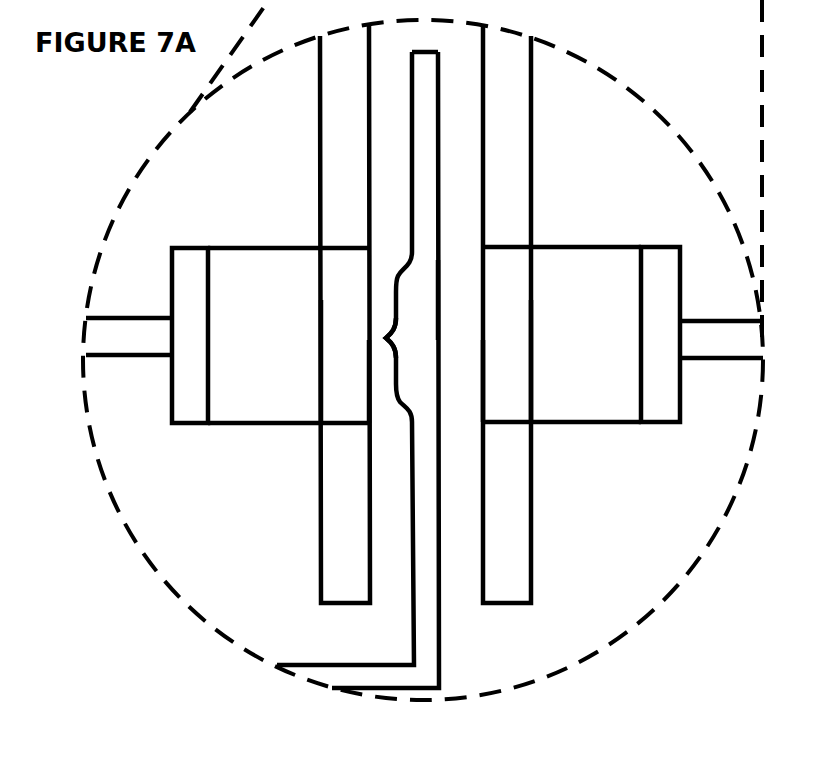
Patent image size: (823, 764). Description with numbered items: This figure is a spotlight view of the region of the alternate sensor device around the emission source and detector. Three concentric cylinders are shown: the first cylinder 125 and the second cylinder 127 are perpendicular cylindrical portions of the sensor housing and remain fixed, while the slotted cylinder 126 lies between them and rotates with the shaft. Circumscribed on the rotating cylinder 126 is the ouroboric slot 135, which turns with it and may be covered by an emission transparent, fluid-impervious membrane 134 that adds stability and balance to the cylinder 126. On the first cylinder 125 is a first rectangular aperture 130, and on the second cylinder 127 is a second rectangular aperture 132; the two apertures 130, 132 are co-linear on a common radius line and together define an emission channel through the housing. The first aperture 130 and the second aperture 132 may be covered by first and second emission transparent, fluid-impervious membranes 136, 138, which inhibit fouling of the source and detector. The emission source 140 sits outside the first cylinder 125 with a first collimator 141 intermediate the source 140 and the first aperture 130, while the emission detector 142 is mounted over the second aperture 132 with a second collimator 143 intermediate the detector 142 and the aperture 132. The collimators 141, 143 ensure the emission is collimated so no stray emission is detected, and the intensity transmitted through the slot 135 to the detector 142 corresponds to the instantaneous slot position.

The first cylinder 125 is at (327, 160).
The second cylinder 127 is at (525, 158).
The slotted cylinder 126 is at (433, 618).
The emission source 140 is at (186, 248).
The first collimator 141 is at (265, 248).
The emission detector 142 is at (660, 248).
The second collimator 143 is at (583, 248).
The ouroboric slot 135 is at (385, 338).
The emission transparent fluid-impervious membrane 134 is at (440, 300).
The first rectangular aperture 130 is at (332, 375).
The first emission transparent fluid-impervious membrane 136 is at (370, 387).
The second emission transparent fluid-impervious membrane 138 is at (485, 393).
The second rectangular aperture 132 is at (503, 337).